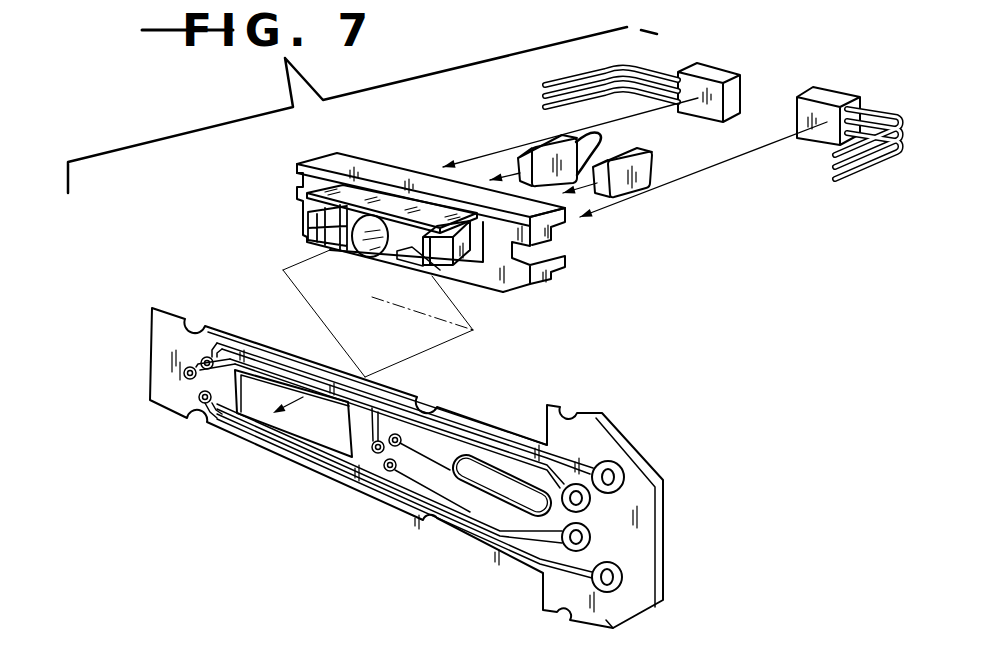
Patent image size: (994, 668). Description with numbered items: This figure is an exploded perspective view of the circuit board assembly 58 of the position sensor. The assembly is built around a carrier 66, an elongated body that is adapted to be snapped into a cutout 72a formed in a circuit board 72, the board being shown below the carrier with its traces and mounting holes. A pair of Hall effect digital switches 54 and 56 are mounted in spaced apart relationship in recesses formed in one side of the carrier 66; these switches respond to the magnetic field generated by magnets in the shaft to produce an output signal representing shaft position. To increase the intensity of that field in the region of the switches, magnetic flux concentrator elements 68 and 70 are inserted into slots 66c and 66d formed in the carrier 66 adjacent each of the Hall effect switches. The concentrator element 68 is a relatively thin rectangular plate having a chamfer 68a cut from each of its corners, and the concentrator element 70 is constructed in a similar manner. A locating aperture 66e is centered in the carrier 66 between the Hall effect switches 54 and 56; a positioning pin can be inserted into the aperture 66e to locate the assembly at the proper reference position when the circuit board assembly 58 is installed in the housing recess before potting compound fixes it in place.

The Hall effect digital switch 54 is at (710, 70).
The Hall effect digital switch 56 is at (827, 97).
The circuit board assembly 58 is at (697, 343).
The carrier 66 is at (520, 295).
The slot 66c is at (309, 232).
The slot 66d is at (398, 253).
The locating aperture 66e is at (373, 243).
The magnetic flux concentrator element 68 is at (531, 147).
The chamfer 68a is at (528, 150).
The magnetic flux concentrator element 70 is at (640, 170).
The circuit board 72 is at (475, 555).
The cutout 72a is at (310, 428).